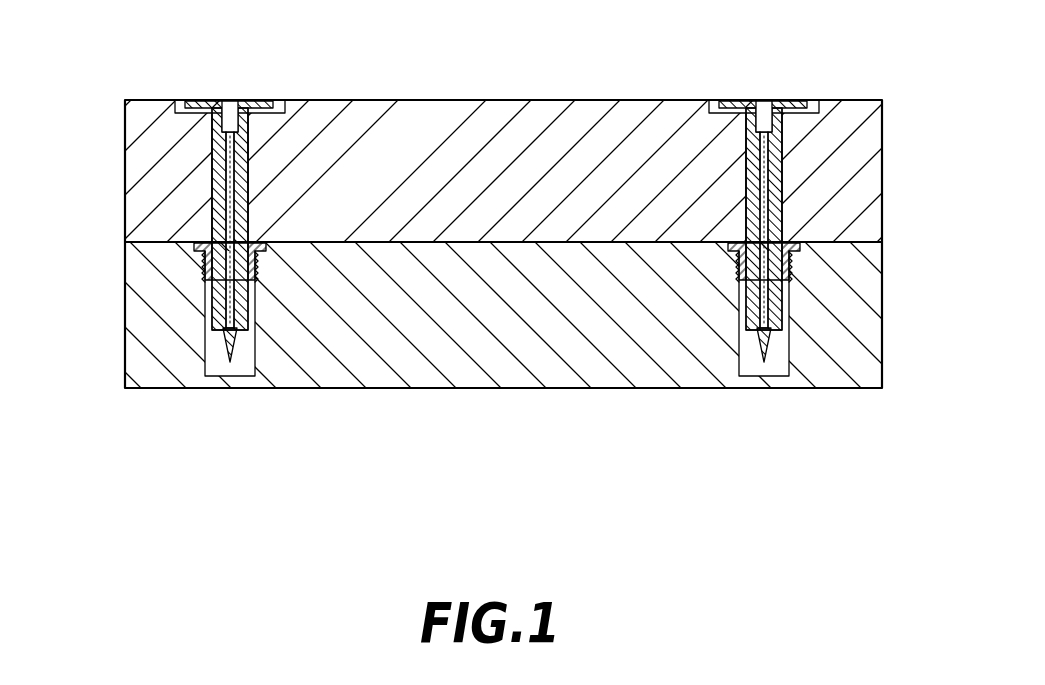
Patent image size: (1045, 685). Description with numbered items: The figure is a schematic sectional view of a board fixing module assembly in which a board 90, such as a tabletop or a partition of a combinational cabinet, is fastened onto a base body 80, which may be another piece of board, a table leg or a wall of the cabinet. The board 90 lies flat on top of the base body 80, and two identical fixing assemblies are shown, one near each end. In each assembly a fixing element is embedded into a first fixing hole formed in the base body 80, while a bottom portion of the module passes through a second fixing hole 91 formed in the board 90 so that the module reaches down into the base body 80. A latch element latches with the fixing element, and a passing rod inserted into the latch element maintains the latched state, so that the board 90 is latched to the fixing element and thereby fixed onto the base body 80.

The base body 80 is at (443, 390).
The board 90 is at (505, 98).
The second fixing hole 91 is at (782, 162).